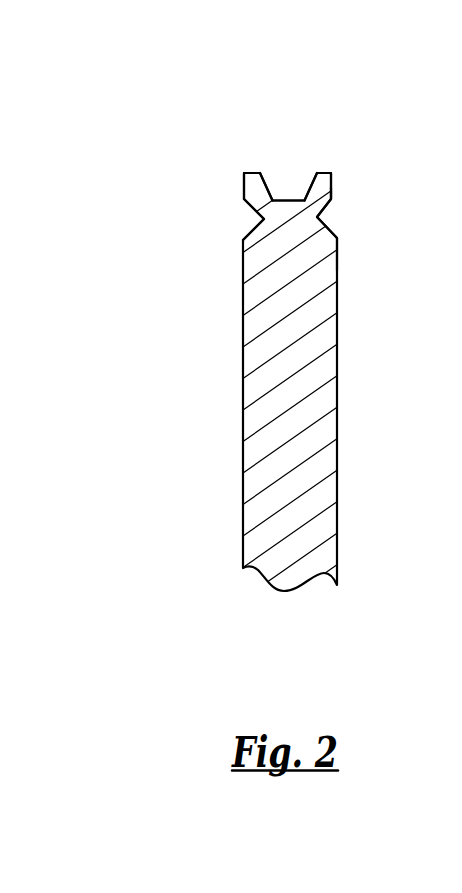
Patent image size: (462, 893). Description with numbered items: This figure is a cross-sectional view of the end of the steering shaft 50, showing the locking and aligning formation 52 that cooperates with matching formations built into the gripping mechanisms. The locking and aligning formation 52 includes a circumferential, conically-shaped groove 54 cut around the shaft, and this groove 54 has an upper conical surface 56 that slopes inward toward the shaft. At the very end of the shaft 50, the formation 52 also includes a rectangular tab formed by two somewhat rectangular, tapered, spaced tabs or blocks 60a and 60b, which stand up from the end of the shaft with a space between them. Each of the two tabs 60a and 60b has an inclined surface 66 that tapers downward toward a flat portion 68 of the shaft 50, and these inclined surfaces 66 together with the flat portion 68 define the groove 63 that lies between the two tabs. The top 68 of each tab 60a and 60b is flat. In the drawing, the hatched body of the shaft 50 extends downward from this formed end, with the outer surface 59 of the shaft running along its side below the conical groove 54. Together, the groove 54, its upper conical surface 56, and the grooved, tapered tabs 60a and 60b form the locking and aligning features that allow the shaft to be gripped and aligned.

The steering shaft 50 is at (231, 456).
The locking and aligning formation 52 is at (243, 196).
The conically-shaped groove 54 is at (325, 221).
The upper conical surface 56 is at (333, 201).
The outer peripheral surface 59 is at (338, 243).
The tapered spaced tab 60a is at (242, 175).
The tapered spaced tab 60b is at (334, 188).
The groove 63 is at (300, 199).
The inclined surface 66 is at (296, 199).
The flat portion 68 is at (256, 175).